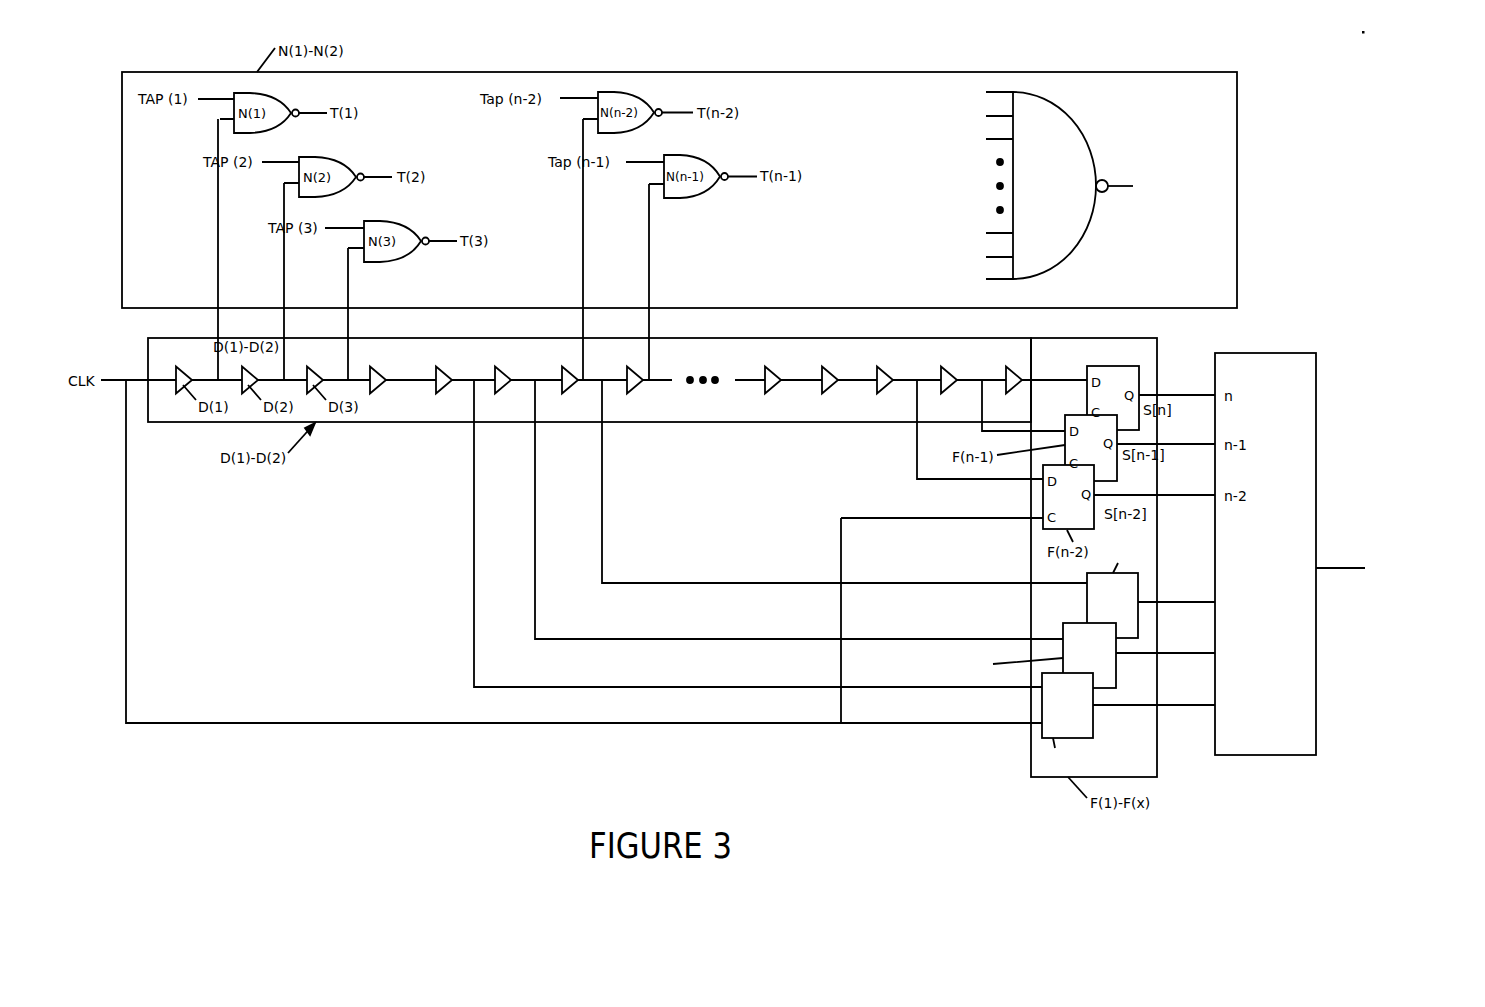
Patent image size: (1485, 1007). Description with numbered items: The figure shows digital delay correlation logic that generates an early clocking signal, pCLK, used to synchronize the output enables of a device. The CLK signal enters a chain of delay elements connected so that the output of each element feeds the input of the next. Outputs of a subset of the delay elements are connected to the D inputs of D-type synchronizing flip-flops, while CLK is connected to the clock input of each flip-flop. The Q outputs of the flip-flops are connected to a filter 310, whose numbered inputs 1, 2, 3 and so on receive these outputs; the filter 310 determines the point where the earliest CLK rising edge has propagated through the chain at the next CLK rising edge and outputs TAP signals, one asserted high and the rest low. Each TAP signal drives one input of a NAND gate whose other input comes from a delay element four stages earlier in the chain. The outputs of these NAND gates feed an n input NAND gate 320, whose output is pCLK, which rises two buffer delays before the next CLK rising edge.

The filter 310 is at (1316, 420).
The n input NAND gate 320 is at (1080, 133).
The filter input 1 (from flip-flop F(1)) 1 is at (1137, 720).
The filter input 2 (from flip-flop F(2)) 2 is at (1099, 655).
The filter input 3 (from flip-flop F(3)) 3 is at (1160, 593).